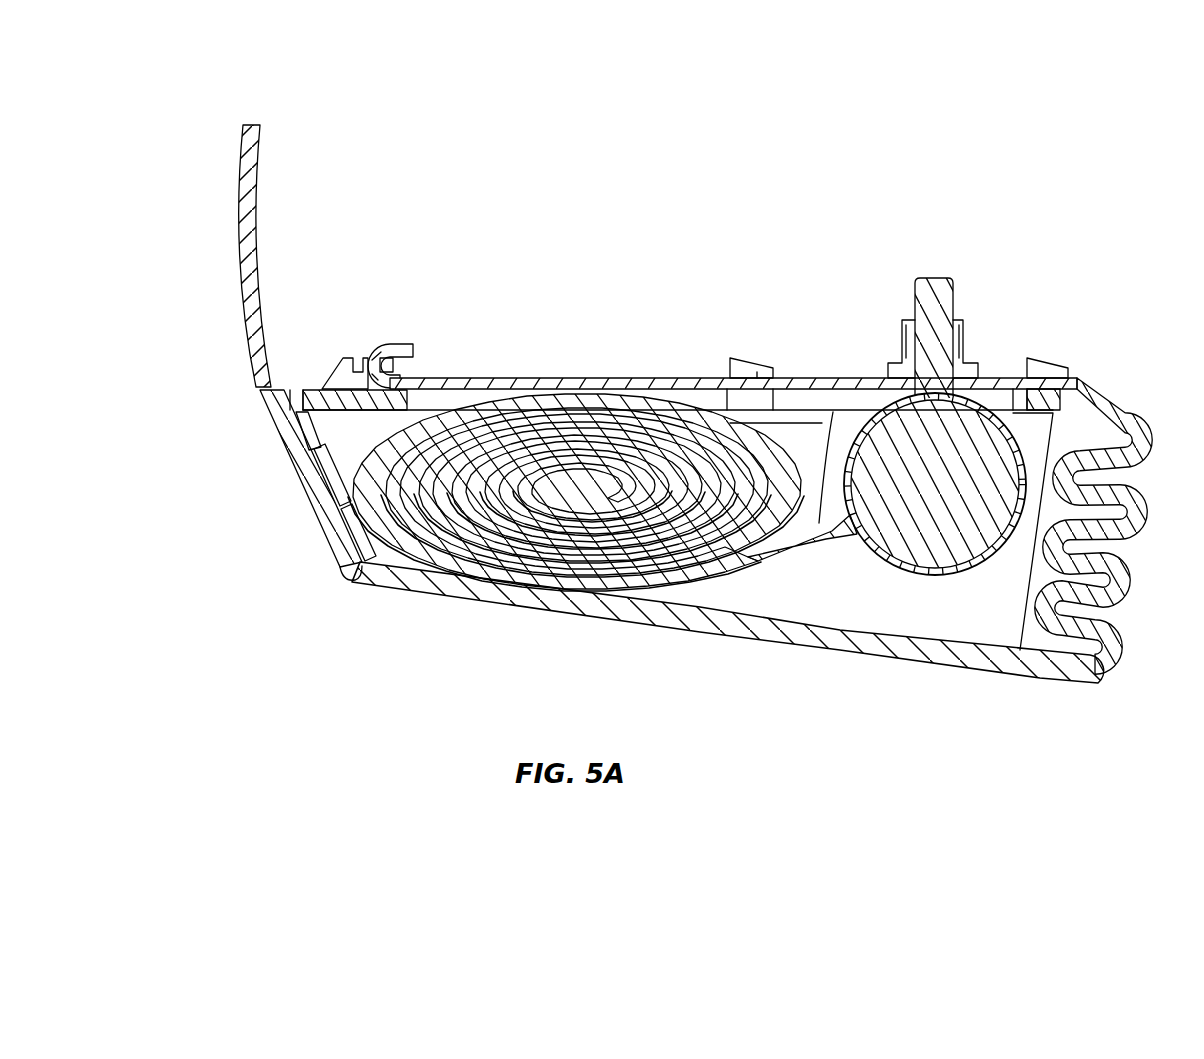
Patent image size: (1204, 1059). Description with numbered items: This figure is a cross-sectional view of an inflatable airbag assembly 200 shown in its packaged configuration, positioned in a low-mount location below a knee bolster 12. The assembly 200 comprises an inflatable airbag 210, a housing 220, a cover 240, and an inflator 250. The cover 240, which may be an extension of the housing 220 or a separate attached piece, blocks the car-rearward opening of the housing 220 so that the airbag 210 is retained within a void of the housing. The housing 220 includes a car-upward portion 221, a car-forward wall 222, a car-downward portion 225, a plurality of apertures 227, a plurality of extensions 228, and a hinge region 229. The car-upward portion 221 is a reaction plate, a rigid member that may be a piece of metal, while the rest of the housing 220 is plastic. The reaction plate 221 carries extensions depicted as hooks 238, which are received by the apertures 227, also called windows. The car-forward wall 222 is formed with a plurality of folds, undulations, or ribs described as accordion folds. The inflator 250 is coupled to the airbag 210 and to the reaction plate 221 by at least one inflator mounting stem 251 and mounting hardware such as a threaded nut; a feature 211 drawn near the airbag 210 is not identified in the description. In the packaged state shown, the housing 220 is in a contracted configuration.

The airbag assembly 200 is at (729, 114).
The knee bolster 12 is at (258, 222).
The housing 220 is at (610, 356).
The cover 240 is at (300, 468).
The hinge region 229 is at (372, 578).
The apertures 227 is at (353, 372).
The hooks 238 is at (397, 345).
The reaction plate 221 is at (518, 385).
The extensions 228 is at (742, 372).
The inflatable airbag 210 is at (682, 425).
The spring outer end 211 is at (830, 470).
The inflator 250 is at (958, 420).
The inflator mounting stem 251 is at (935, 292).
The car-forward wall 222 is at (1125, 578).
The car-downward portion 225 is at (712, 625).